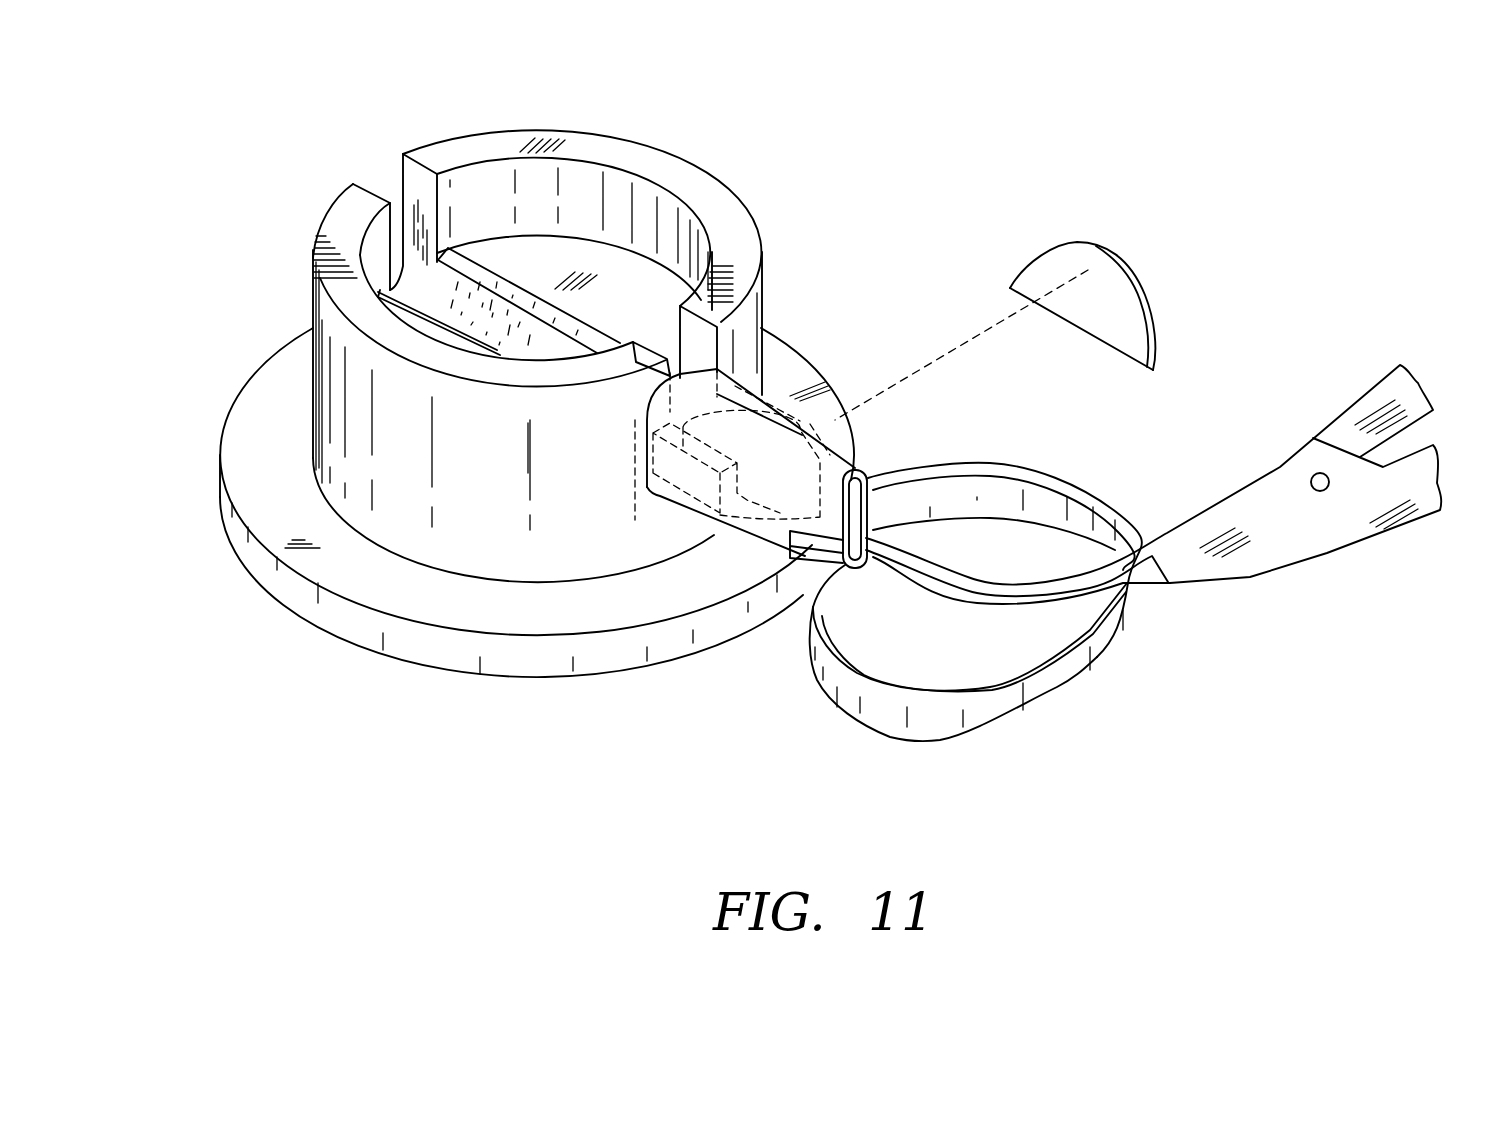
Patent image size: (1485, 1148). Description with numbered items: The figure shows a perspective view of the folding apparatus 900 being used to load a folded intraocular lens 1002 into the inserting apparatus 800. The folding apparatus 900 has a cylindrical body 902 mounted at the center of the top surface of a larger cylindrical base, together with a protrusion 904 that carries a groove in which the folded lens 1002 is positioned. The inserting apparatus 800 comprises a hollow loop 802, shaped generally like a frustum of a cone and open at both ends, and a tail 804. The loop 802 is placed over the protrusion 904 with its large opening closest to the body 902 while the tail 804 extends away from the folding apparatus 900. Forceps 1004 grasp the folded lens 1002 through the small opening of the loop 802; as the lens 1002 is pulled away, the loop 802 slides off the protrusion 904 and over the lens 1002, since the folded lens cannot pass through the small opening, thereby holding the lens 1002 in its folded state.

The apparatus for folding an intraocular lens 900 is at (583, 132).
The body 902 is at (327, 213).
The protrusion 904 is at (692, 477).
The loop 802 is at (733, 523).
The folded intraocular lens 1002 is at (1103, 248).
The forceps 1004 is at (1320, 557).
The tail 804 is at (1063, 693).
The apparatus for inserting an intraocular lens 800 is at (842, 715).